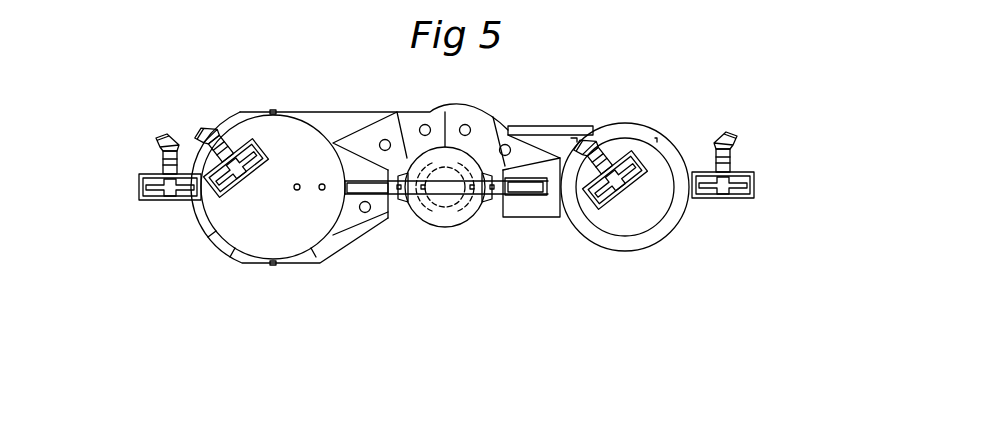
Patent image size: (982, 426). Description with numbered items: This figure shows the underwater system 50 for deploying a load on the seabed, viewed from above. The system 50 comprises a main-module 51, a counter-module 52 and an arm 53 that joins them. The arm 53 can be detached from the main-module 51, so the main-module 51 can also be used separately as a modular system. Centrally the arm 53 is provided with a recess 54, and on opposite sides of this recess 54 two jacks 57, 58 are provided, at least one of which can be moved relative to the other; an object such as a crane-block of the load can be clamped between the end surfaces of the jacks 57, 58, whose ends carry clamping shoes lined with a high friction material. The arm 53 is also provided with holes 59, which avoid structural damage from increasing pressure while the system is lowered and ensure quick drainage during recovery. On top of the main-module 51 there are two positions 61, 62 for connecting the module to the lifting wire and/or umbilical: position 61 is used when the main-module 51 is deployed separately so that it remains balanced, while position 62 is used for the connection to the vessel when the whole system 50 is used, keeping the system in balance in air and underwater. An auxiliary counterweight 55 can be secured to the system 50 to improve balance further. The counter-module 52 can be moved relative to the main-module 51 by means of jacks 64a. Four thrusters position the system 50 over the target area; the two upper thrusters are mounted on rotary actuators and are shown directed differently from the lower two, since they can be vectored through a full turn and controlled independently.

The system 50 is at (352, 106).
The main-module 51 is at (293, 248).
The counter-module 52 is at (652, 238).
The arm 53 is at (486, 125).
The recess 54 is at (489, 217).
The auxiliary counterweight 55 is at (213, 232).
The jack 57 is at (375, 215).
The jack 58 is at (527, 200).
The holes 59 is at (467, 124).
The position 61 is at (292, 185).
The position 62 is at (322, 183).
The jacks 64a is at (560, 128).